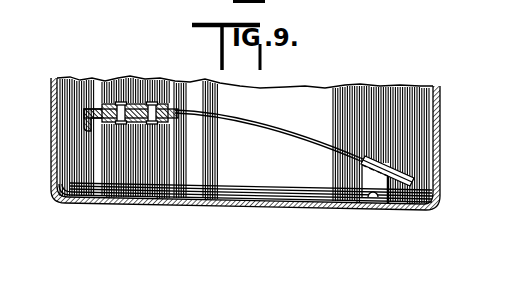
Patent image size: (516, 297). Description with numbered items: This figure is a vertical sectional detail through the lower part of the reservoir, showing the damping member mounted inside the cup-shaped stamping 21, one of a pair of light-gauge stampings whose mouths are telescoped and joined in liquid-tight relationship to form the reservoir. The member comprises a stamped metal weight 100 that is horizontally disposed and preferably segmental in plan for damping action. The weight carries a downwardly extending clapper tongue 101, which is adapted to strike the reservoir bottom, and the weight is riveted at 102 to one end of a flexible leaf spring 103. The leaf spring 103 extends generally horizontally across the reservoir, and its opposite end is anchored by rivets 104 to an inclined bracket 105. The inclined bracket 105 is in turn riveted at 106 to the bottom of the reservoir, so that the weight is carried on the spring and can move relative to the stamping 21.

The cup-shaped stamping 21 is at (441, 120).
The stamped metal weight 100 is at (95, 110).
The clapper tongue 101 is at (80, 128).
The rivet 102 is at (126, 103).
The flexible leaf spring 103 is at (265, 108).
The rivets 104 is at (408, 167).
The inclined bracket 105 is at (367, 178).
The rivet 106 is at (373, 198).